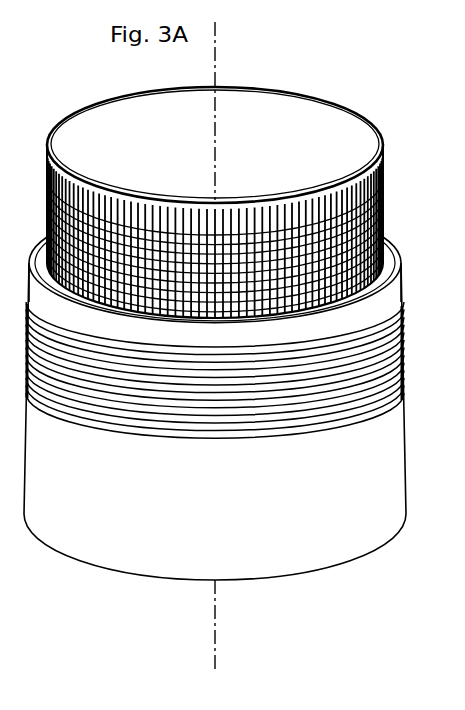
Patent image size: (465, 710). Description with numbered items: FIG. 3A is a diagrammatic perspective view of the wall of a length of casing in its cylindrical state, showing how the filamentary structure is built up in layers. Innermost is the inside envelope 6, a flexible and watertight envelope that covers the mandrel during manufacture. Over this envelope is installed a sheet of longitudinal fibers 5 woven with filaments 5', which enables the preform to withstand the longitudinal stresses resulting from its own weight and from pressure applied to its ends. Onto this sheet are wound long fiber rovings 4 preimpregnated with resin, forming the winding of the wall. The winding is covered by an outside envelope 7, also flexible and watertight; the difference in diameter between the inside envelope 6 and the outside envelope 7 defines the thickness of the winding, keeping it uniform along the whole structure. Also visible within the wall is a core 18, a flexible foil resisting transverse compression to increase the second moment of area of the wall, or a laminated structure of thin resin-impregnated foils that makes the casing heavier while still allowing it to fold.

The inside envelope 6 is at (330, 135).
The longitudinal fibers 5 is at (215, 223).
The filaments 5' is at (215, 230).
The core 18 is at (398, 248).
The fiber rovings 4 is at (403, 329).
The outside envelope 7 is at (464, 398).